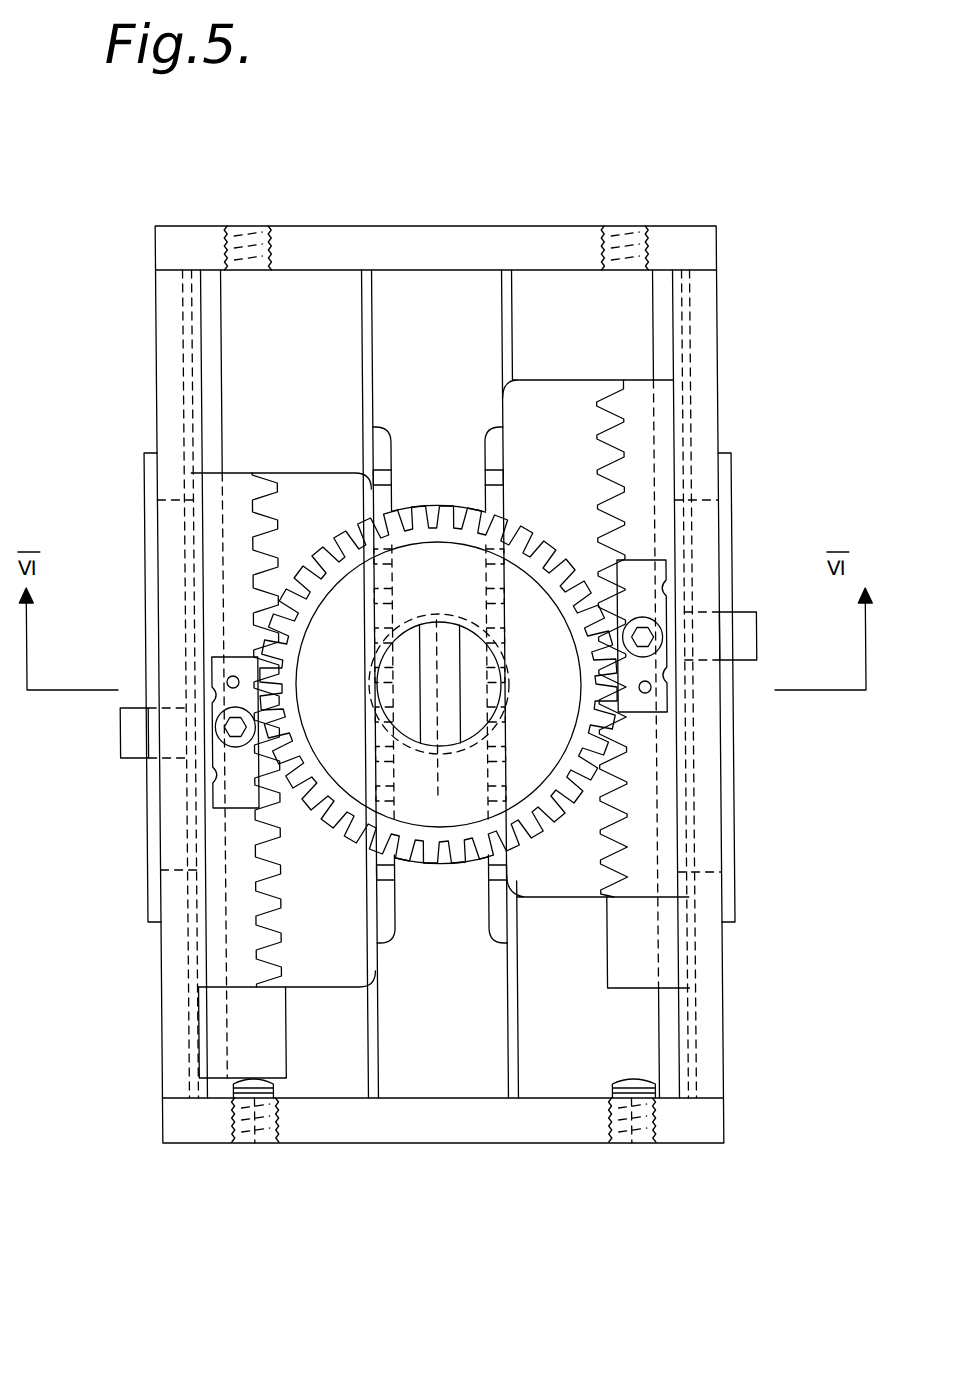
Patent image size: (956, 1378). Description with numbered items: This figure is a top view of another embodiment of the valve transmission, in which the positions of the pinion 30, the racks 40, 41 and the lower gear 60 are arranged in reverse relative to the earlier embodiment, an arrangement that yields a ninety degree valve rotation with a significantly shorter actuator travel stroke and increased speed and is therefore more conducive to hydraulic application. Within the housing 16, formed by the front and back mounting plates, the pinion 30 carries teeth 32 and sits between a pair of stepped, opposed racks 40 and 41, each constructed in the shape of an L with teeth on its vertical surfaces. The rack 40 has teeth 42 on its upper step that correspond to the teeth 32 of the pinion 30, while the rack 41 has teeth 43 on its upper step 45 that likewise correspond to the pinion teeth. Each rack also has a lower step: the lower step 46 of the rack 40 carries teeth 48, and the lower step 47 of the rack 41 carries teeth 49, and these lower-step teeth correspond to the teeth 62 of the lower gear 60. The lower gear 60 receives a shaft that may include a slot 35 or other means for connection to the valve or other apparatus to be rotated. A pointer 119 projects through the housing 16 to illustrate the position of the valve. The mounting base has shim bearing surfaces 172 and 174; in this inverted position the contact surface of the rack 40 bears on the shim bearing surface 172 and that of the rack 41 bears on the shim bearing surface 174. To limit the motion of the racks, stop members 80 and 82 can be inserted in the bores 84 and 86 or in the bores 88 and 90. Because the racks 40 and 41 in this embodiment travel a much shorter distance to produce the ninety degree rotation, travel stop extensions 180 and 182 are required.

The housing 16 is at (723, 1065).
The pinion 30 is at (378, 688).
The teeth 32 is at (452, 719).
The slot 35 is at (437, 666).
The rack 40 is at (303, 897).
The rack 41 is at (573, 452).
The teeth 42 is at (382, 884).
The teeth 43 is at (535, 460).
The upper step 45 is at (587, 523).
The lower step 46 is at (233, 530).
The lower step 47 is at (640, 863).
The teeth 48 is at (258, 497).
The teeth 49 is at (620, 782).
The lower gear 60 is at (437, 560).
The teeth 62 is at (342, 817).
The stop member 80 is at (273, 1087).
The stop member 82 is at (622, 1080).
The bore 84 is at (247, 227).
The bore 86 is at (635, 227).
The bore 88 is at (255, 1143).
The bore 90 is at (618, 1143).
The pointer 119 is at (121, 735).
The shim bearing surface 172 is at (272, 325).
The shim bearing surface 174 is at (590, 1010).
The travel stop extension 180 is at (250, 1035).
The travel stop extension 182 is at (635, 945).